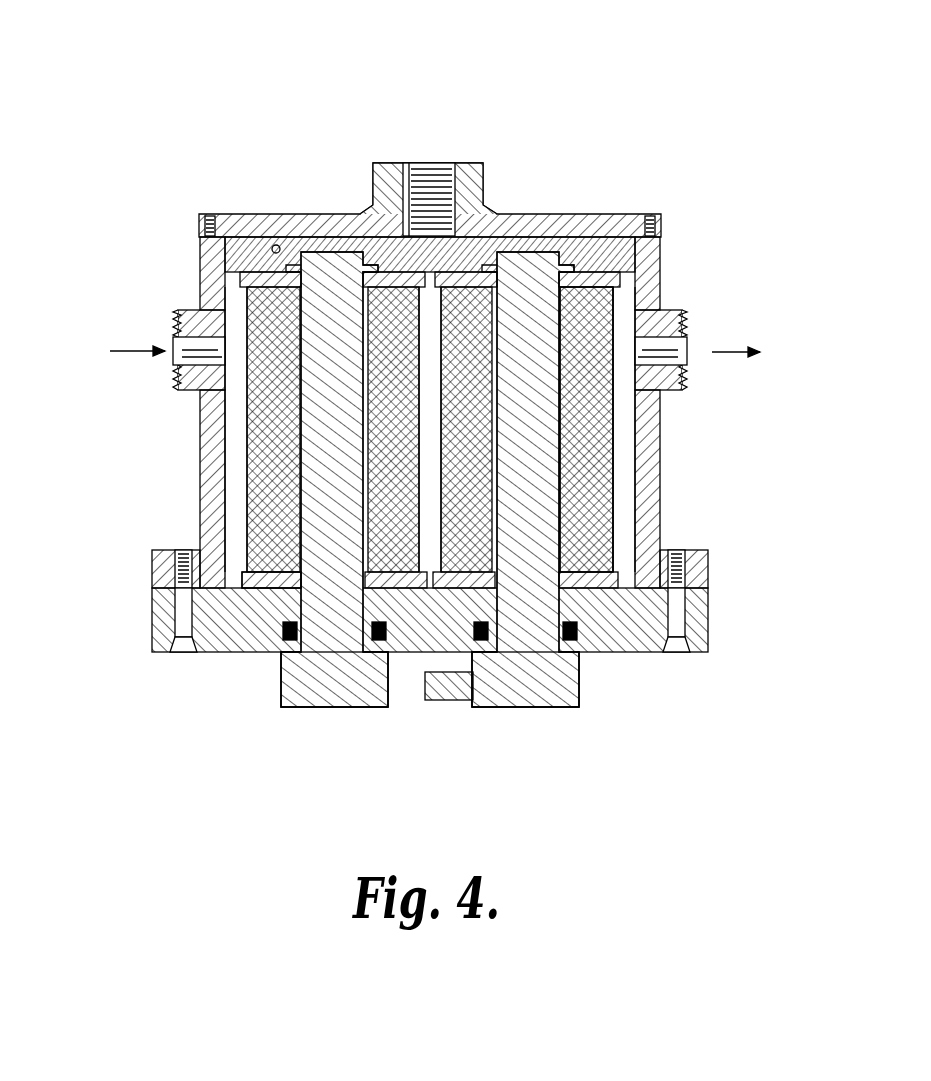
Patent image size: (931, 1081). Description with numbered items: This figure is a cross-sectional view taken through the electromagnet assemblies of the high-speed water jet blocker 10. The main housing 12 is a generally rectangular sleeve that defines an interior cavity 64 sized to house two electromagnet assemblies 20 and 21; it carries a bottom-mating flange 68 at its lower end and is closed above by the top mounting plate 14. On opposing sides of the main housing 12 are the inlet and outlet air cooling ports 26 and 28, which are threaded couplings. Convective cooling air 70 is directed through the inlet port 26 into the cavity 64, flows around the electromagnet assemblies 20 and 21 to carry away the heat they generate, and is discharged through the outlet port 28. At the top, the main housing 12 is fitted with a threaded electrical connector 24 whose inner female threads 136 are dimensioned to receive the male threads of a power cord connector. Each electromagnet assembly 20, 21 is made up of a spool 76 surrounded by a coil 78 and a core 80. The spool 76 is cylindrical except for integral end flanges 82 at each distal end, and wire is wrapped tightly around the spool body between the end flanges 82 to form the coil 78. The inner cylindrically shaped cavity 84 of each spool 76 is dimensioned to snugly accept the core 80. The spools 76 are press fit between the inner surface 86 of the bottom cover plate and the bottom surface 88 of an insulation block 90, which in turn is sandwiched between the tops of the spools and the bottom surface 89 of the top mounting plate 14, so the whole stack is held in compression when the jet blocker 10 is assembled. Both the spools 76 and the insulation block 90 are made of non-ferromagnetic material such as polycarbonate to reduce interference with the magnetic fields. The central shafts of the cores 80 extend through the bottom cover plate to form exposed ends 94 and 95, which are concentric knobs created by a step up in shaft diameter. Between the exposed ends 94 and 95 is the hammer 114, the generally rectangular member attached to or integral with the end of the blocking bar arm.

The high-speed water jet blocker 10 is at (415, 401).
The main housing 12 is at (414, 434).
The top mounting plate 14 is at (430, 180).
The electromagnet assembly 20 is at (622, 312).
The electromagnet assembly 21 is at (427, 473).
The electrical connector 24 is at (485, 181).
The inlet air cooling port 26 is at (173, 378).
The outlet air cooling port 28 is at (687, 323).
The interior cavity 64 is at (322, 456).
The bottom-mating flange 68 is at (152, 560).
The convective cooling air 70 is at (130, 351).
The spool 76 is at (305, 496).
The coil 78 is at (247, 425).
The core 80 is at (297, 473).
The integral end flange 82 is at (257, 278).
The inner cylindrically shaped cavity 84 is at (290, 511).
The inner surface of bottom cover plate 86 is at (252, 570).
The bottom surface of insulation block 88 is at (222, 280).
The bottom surface of top mounting plate 89 is at (278, 250).
The insulation block 90 is at (290, 252).
The exposed core end 94 is at (332, 707).
The exposed core end 95 is at (527, 707).
The hammer 114 is at (433, 700).
The inner female threads 136 is at (443, 180).